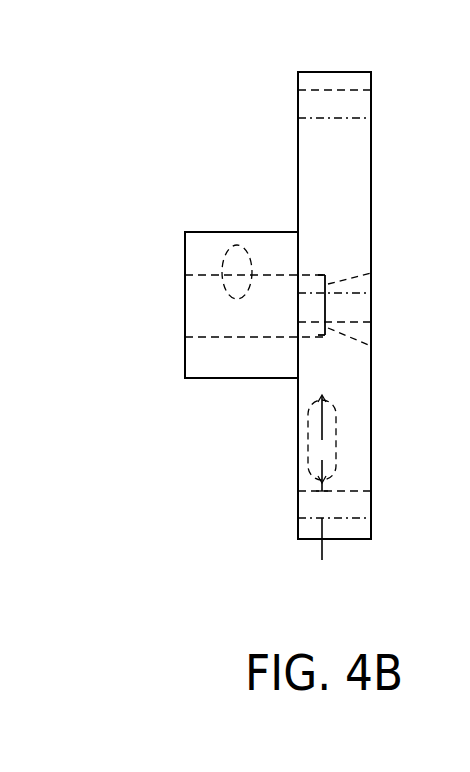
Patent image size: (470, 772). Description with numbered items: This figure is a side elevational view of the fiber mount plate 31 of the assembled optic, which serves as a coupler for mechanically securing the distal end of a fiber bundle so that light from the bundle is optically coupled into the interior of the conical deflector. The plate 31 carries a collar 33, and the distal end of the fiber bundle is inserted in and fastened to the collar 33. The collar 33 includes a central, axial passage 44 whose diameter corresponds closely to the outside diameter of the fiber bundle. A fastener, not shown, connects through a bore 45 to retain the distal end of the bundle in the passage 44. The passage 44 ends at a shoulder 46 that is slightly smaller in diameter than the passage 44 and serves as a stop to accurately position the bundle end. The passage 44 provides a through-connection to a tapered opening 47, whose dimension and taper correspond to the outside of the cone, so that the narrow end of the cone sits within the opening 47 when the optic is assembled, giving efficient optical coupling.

The fiber mount plate 31 is at (348, 72).
The collar 33 is at (225, 378).
The central axial passage 44 is at (228, 337).
The bore 45 is at (226, 255).
The shoulder 46 is at (325, 333).
The tapered opening 47 is at (356, 283).